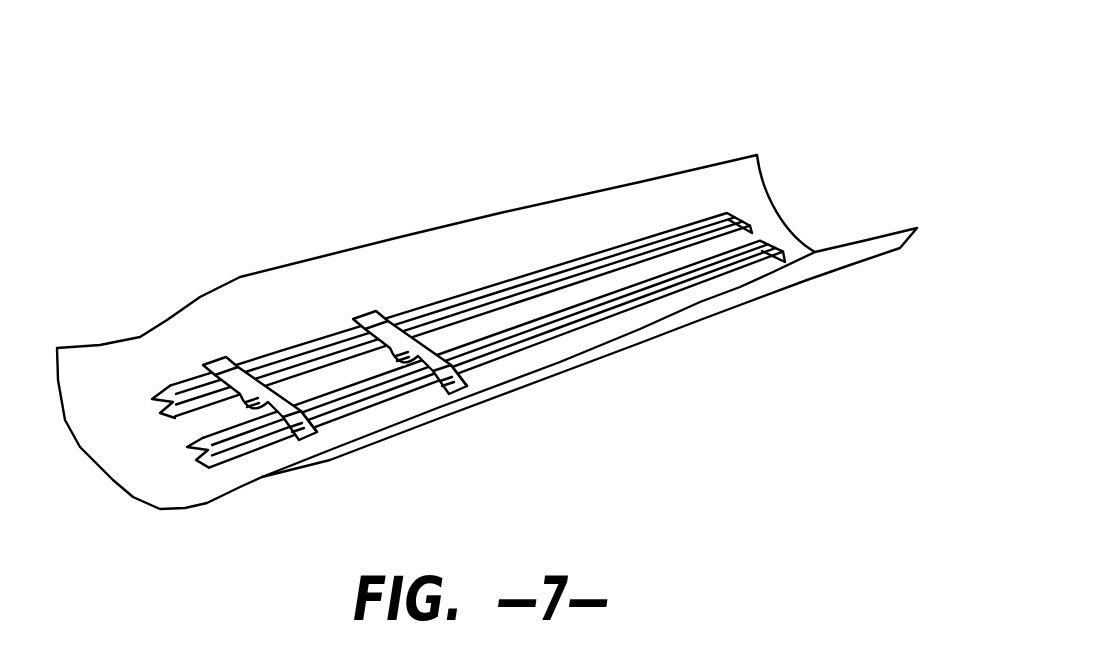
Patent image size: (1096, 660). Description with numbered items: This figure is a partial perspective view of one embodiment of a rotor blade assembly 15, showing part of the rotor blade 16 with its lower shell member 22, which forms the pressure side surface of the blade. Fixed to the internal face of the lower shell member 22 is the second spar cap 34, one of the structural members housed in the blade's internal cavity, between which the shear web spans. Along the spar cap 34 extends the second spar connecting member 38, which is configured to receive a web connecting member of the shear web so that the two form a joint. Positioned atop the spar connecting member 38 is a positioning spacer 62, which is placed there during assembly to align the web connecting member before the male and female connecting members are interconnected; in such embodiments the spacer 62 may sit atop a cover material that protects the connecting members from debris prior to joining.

The rotor blade assembly 15 is at (487, 284).
The rotor blade 16 is at (592, 223).
The lower shell member 22 is at (797, 275).
The second spar cap 34 is at (150, 417).
The second spar connecting member 38 is at (199, 364).
The positioning spacer 62 is at (340, 417).